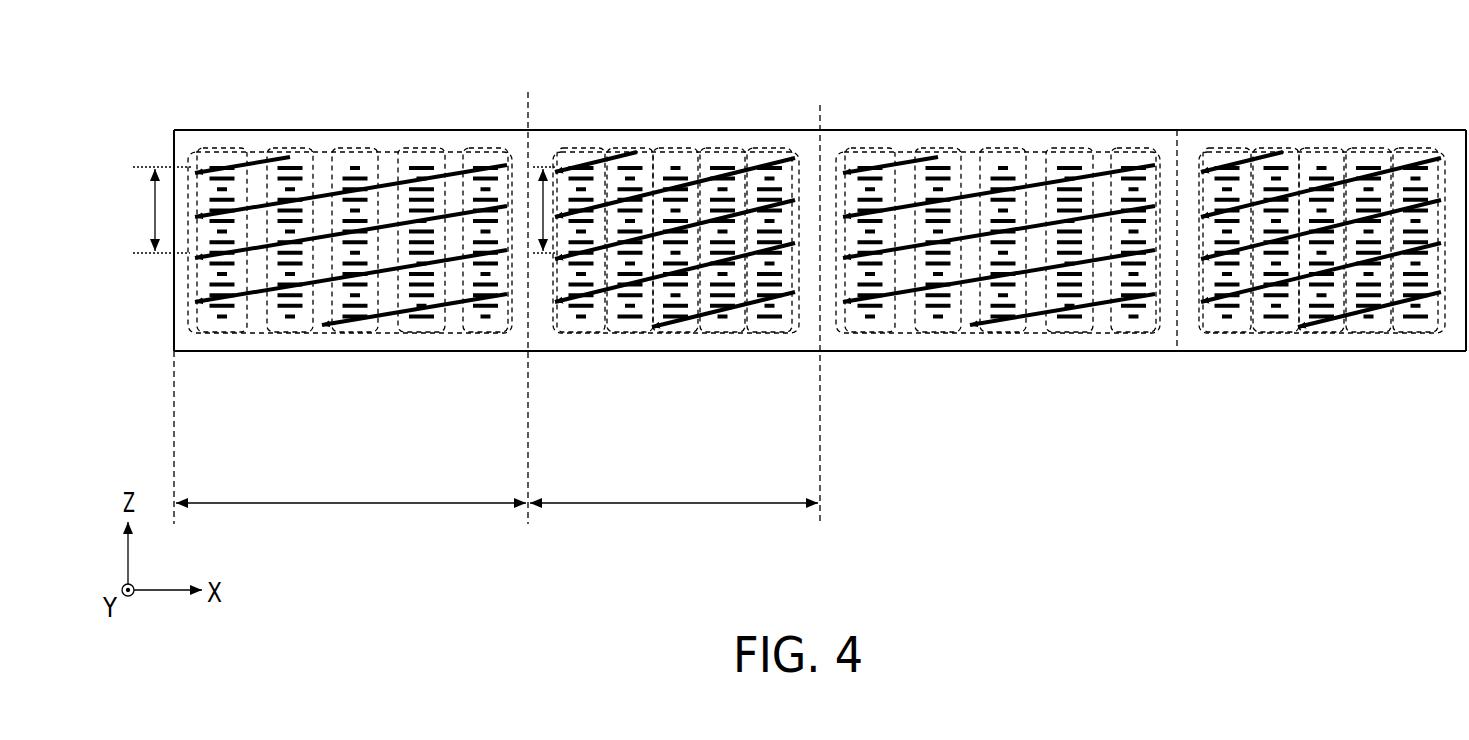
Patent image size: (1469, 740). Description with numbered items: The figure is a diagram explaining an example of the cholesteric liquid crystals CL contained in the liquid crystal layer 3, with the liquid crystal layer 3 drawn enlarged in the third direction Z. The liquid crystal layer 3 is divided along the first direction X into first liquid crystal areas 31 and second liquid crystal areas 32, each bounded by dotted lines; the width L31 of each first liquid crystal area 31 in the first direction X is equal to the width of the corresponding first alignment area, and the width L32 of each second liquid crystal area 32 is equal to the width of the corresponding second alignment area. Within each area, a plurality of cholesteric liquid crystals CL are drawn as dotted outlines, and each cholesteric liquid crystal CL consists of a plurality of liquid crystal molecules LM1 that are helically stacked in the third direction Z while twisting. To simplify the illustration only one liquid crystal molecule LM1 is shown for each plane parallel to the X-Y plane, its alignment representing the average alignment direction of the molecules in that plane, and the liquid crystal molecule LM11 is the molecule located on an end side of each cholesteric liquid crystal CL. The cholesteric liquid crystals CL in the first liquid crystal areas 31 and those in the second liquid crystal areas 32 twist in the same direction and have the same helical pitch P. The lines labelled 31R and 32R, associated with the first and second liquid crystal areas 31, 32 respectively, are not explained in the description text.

The liquid crystal layer 3 is at (837, 126).
The first liquid crystal area 31 is at (196, 129).
The second liquid crystal area 32 is at (560, 129).
The first irradiation trace 31R is at (453, 207).
The second irradiation trace 32R is at (782, 152).
The cholesteric liquid crystal CL is at (465, 148).
The helical pitch P is at (541, 216).
The liquid crystal molecule LM1 is at (188, 285).
The liquid crystal molecule LM11 is at (222, 320).
The width of first liquid crystal area L31 is at (351, 522).
The width of second liquid crystal area L32 is at (674, 522).